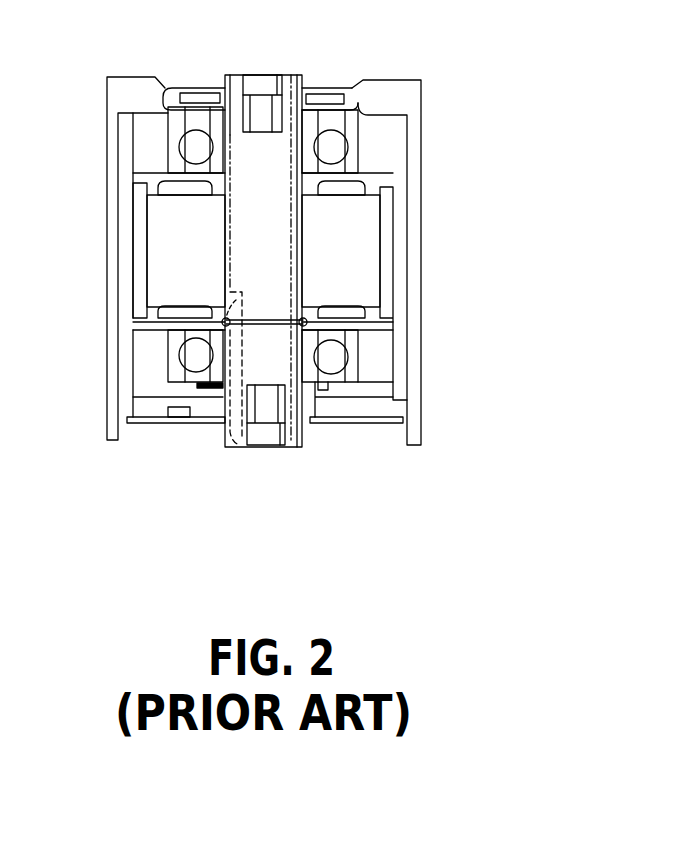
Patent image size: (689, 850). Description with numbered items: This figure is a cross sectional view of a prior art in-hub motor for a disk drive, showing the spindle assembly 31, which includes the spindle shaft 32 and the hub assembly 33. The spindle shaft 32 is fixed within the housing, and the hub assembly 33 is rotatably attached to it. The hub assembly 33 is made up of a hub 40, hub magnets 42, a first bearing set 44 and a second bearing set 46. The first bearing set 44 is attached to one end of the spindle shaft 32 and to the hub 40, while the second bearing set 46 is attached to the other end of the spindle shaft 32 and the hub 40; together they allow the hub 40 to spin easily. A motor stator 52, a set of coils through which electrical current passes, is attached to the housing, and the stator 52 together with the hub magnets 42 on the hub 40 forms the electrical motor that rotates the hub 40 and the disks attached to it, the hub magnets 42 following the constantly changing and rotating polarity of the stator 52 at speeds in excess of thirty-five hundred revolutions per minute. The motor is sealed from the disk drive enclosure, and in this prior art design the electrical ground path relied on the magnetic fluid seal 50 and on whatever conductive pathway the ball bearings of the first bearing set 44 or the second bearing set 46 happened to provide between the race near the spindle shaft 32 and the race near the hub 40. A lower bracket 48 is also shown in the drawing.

The spindle assembly 31 is at (466, 121).
The spindle shaft 32 is at (298, 74).
The hub assembly 33 is at (128, 85).
The hub 40 is at (416, 326).
The hub magnets 42 is at (388, 257).
The first bearing set 44 is at (172, 128).
The second bearing set 46 is at (175, 368).
The lower bracket 48 is at (372, 390).
The magnetic fluid seal 50 is at (342, 88).
The motor stator 52 is at (168, 261).